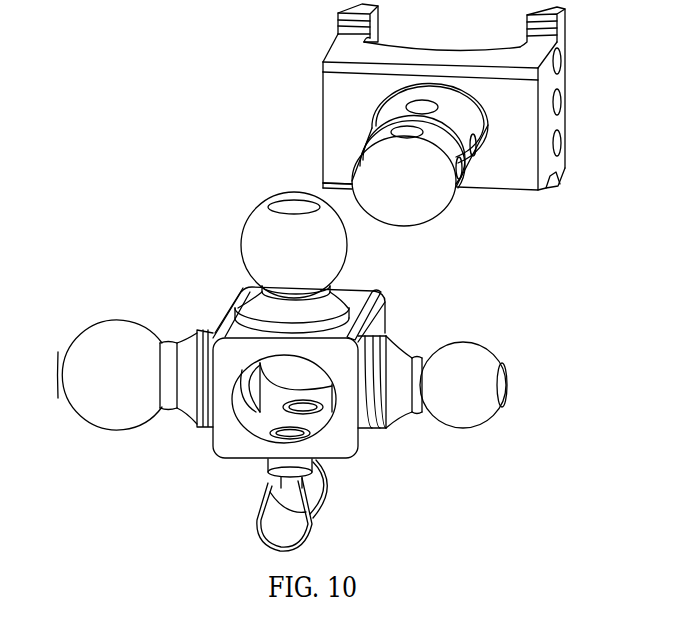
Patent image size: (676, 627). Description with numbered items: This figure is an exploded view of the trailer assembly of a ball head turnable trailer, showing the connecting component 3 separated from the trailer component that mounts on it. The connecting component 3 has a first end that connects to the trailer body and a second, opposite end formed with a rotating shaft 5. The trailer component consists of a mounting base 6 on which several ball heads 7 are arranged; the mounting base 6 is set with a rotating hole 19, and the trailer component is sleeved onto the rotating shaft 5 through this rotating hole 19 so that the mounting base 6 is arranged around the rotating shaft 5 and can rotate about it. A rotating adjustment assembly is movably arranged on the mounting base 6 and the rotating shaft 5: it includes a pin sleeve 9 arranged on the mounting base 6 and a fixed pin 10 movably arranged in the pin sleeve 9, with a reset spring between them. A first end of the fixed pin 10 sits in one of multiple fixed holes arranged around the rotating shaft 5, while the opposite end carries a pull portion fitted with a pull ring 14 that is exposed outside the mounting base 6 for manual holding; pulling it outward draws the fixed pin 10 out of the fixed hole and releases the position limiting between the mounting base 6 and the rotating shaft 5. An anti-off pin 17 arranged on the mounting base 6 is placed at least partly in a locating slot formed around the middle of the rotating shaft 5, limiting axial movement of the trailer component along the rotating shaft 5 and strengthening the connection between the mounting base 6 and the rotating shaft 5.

The connecting component 3 is at (302, 44).
The rotating shaft 5 is at (427, 203).
The mounting base 6 is at (378, 322).
The ball head 7 is at (475, 353).
The pin sleeve 9 is at (322, 423).
The fixed pin 10 is at (290, 433).
The pull ring 14 is at (328, 502).
The anti-off pin 17 is at (253, 382).
The rotating hole 19 is at (307, 435).